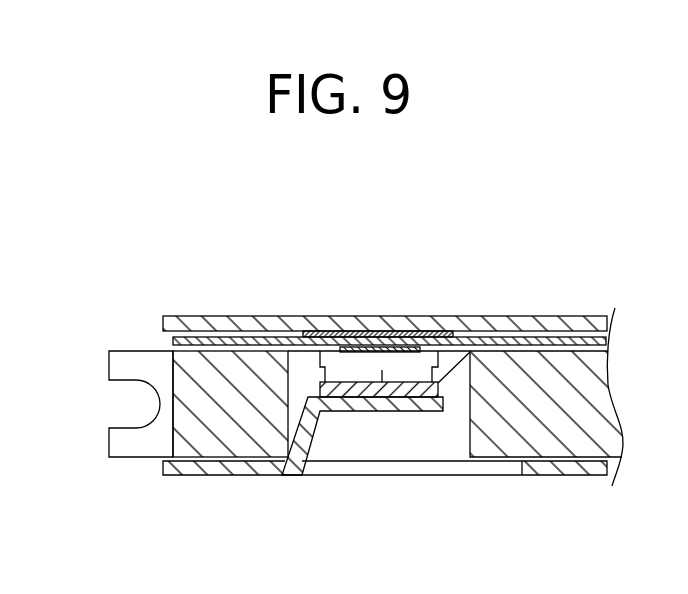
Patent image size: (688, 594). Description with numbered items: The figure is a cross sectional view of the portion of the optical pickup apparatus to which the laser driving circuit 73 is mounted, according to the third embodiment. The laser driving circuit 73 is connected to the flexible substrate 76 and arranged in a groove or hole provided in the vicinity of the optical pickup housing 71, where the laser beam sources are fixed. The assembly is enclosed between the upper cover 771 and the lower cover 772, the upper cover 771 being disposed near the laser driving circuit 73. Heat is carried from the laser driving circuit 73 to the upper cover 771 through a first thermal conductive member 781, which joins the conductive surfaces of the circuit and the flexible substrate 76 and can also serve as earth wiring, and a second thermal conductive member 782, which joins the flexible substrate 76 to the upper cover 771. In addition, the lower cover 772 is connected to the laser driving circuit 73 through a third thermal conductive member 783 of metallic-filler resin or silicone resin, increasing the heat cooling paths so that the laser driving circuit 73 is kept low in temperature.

The optical pickup housing 71 is at (138, 440).
The laser driving circuit 73 is at (398, 411).
The flexible substrate 76 is at (180, 317).
The upper cover 771 is at (283, 316).
The lower cover 772 is at (253, 470).
The first thermal conductive member 781 is at (395, 336).
The second thermal conductive member 782 is at (336, 331).
The third thermal conductive member 783 is at (517, 333).